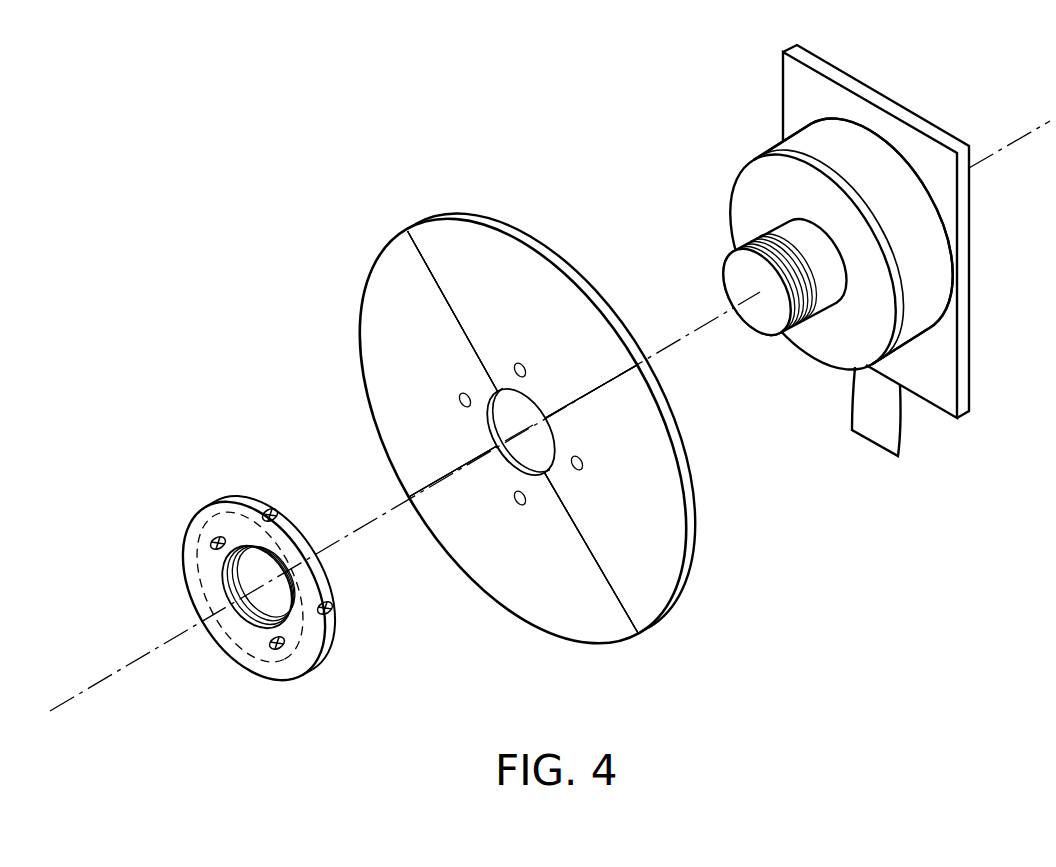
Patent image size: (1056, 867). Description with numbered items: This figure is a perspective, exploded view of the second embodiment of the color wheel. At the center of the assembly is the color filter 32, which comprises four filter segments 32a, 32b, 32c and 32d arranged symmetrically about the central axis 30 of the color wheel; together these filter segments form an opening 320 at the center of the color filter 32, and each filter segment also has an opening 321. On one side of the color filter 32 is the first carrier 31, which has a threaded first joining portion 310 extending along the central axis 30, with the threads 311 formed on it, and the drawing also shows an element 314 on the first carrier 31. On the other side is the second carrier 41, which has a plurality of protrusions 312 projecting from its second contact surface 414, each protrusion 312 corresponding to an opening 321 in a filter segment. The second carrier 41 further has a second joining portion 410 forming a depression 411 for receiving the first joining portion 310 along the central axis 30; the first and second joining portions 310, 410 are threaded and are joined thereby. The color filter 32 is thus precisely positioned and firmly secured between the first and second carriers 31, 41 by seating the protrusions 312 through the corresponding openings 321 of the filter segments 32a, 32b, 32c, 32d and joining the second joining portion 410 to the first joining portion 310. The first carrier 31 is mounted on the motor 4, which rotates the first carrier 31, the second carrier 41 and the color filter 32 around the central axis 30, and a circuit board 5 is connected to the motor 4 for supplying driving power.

The motor 4 is at (900, 177).
The circuit board 5 is at (868, 115).
The central axis 30 is at (1022, 137).
The first carrier 31 is at (723, 194).
The first joining portion 310 is at (768, 315).
The threaded portion 311 is at (773, 243).
The protrusions 312 is at (205, 565).
The wire tab 314 is at (873, 315).
The color filter 32 is at (443, 202).
The filter segment 32a is at (468, 442).
The filter segment 32b is at (522, 593).
The filter segment 32c is at (576, 495).
The filter segment 32d is at (483, 257).
The opening 320 is at (535, 403).
The opening 321 is at (519, 371).
The second carrier 41 is at (212, 512).
The second joining portion 410 is at (249, 544).
The depression 411 is at (233, 647).
The second contact surface 414 is at (294, 668).